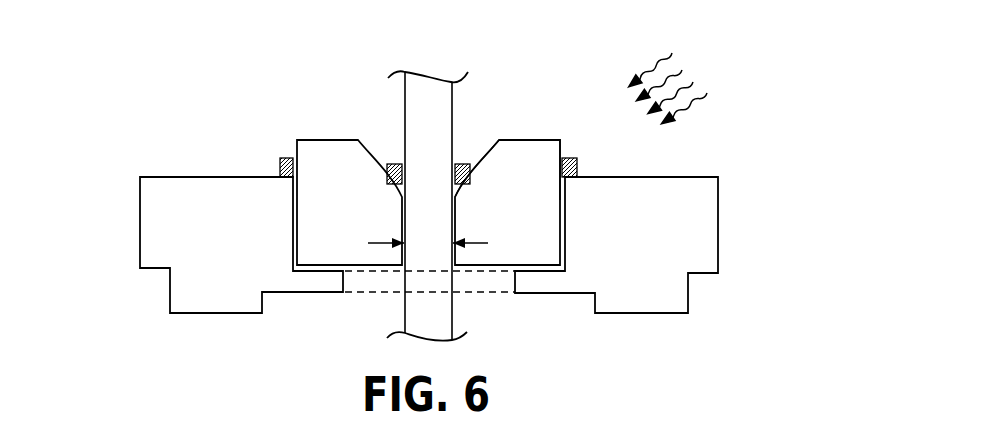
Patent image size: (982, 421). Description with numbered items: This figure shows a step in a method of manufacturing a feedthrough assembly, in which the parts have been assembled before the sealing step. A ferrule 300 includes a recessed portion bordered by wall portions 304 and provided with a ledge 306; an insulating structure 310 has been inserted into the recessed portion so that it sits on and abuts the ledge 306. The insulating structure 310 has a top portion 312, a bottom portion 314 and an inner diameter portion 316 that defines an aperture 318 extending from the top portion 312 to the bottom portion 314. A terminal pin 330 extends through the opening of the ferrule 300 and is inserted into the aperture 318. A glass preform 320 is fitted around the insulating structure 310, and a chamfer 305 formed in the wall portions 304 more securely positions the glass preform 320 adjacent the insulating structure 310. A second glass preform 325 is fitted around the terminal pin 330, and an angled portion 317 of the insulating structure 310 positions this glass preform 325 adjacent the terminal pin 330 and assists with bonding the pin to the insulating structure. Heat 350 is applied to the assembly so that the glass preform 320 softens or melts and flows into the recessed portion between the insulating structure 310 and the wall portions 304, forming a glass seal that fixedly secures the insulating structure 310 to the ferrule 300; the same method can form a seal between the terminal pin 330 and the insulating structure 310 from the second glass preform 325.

The ferrule 300 is at (108, 232).
The wall portions 304 is at (277, 176).
The chamfer 305 is at (283, 179).
The ledge 306 is at (323, 272).
The insulating structure 310 is at (484, 170).
The top portion 312 is at (520, 158).
The bottom portion 314 is at (537, 268).
The inner diameter portion 316 is at (402, 220).
The angled portion 317 is at (488, 168).
The aperture 318 is at (428, 242).
The glass preform 320 is at (578, 168).
The second glass preform 325 is at (395, 164).
The terminal pin 330 is at (457, 88).
The heat 350 is at (688, 78).